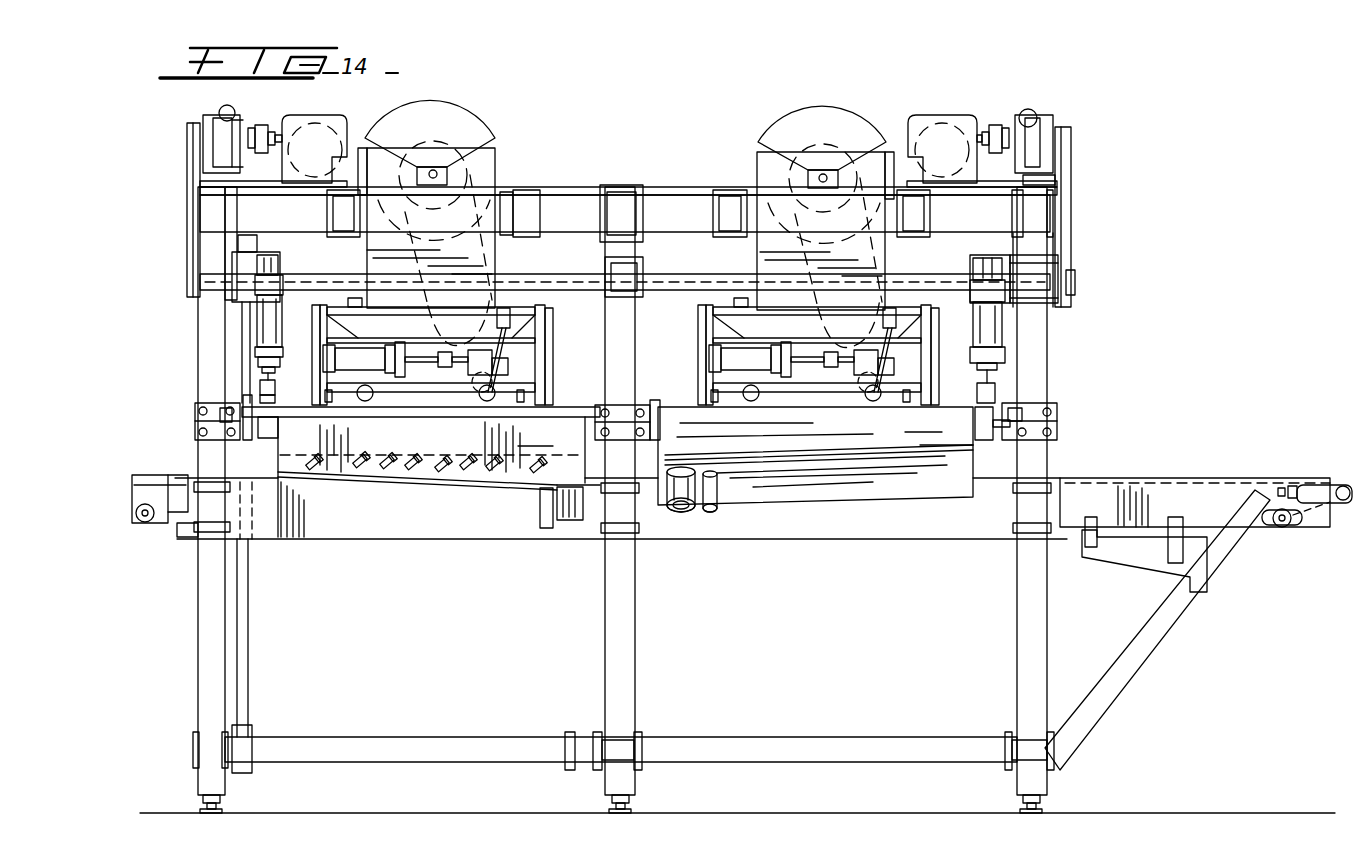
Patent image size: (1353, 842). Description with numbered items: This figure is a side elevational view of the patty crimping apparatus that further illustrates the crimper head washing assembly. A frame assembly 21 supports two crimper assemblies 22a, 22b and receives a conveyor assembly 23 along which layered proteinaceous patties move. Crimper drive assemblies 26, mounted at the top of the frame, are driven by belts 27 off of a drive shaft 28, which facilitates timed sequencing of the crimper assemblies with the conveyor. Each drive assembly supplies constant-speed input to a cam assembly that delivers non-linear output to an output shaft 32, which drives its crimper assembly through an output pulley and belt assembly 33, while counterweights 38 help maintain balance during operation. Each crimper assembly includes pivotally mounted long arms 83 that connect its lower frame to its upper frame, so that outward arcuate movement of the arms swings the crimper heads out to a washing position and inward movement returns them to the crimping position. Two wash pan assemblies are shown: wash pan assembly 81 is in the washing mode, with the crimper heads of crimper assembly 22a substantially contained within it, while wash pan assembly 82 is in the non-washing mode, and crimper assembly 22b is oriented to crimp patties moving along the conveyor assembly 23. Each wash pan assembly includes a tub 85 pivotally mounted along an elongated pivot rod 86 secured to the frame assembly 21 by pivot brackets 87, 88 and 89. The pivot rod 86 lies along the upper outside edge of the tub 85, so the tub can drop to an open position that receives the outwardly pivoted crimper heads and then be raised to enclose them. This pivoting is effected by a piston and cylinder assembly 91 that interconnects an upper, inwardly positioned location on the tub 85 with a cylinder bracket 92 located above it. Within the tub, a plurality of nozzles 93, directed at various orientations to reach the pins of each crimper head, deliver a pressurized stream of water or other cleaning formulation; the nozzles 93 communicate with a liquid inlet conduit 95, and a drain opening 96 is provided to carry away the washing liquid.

The frame assembly 21 is at (1056, 364).
The crimper assembly 22a is at (558, 330).
The crimper assembly 22b is at (690, 332).
The conveyor assembly 23 is at (1260, 458).
The crimper drive assembly 26 is at (303, 105).
The belt 27 is at (1067, 165).
The drive shaft 28 is at (950, 282).
The output shaft 32 is at (440, 176).
The output pulley and belt assembly 33 is at (500, 252).
The counterweight 38 is at (478, 128).
The wash pan assembly 81 is at (266, 455).
The wash pan assembly 82 is at (861, 506).
The long arm 83 is at (548, 378).
The tub 85 is at (730, 427).
The pivot rod 86 is at (250, 400).
The pivot bracket 87 is at (200, 420).
The pivot bracket 88 is at (618, 400).
The pivot bracket 89 is at (1057, 412).
The piston and cylinder assembly 91 is at (265, 327).
The cylinder bracket 92 is at (245, 267).
The nozzles 93 is at (403, 475).
The liquid inlet conduit 95 is at (545, 512).
The drain opening 96 is at (575, 522).